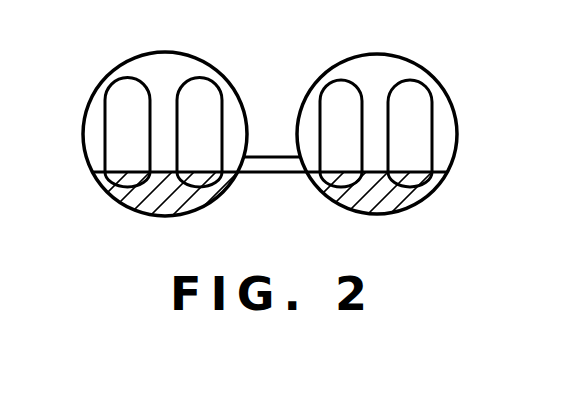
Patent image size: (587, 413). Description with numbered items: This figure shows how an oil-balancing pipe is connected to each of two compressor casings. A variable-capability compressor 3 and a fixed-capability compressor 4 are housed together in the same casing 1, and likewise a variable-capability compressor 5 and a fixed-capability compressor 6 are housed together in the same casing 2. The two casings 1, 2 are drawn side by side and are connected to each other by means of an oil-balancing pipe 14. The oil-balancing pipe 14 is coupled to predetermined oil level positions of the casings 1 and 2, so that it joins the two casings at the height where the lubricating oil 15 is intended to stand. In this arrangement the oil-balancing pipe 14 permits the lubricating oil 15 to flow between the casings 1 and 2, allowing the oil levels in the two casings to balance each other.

The casing 1 is at (163, 52).
The casing 2 is at (378, 53).
The variable-capability compressor 3 is at (127, 132).
The fixed-capability compressor 4 is at (199, 132).
The variable-capability compressor 5 is at (341, 133).
The fixed-capability compressor 6 is at (410, 133).
The oil-balancing pipe 14 is at (272, 155).
The lubricating oil 15 is at (100, 172).